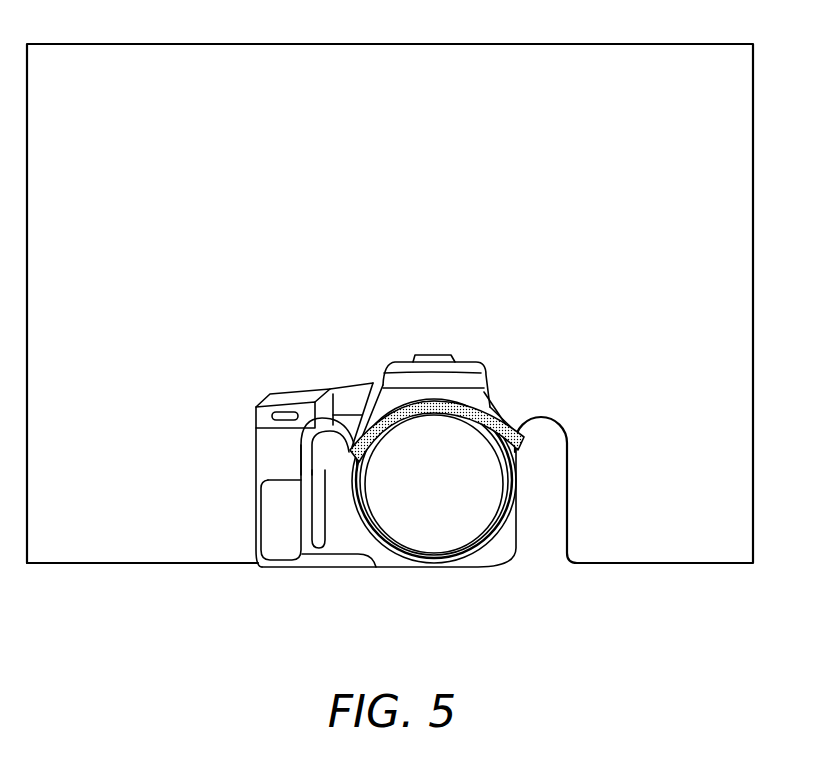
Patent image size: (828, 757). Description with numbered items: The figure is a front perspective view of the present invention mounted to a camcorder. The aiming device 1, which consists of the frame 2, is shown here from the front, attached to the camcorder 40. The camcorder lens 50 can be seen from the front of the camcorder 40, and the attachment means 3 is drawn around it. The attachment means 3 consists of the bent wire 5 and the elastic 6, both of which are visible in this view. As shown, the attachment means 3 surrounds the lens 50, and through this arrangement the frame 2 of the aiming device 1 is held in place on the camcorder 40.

The aiming device 1 is at (753, 143).
The frame 2 is at (42, 43).
The attachment means 3 is at (476, 556).
The bent wire 5 is at (516, 492).
The elastic 6 is at (512, 440).
The camcorder 40 is at (255, 472).
The camcorder lens 50 is at (427, 522).